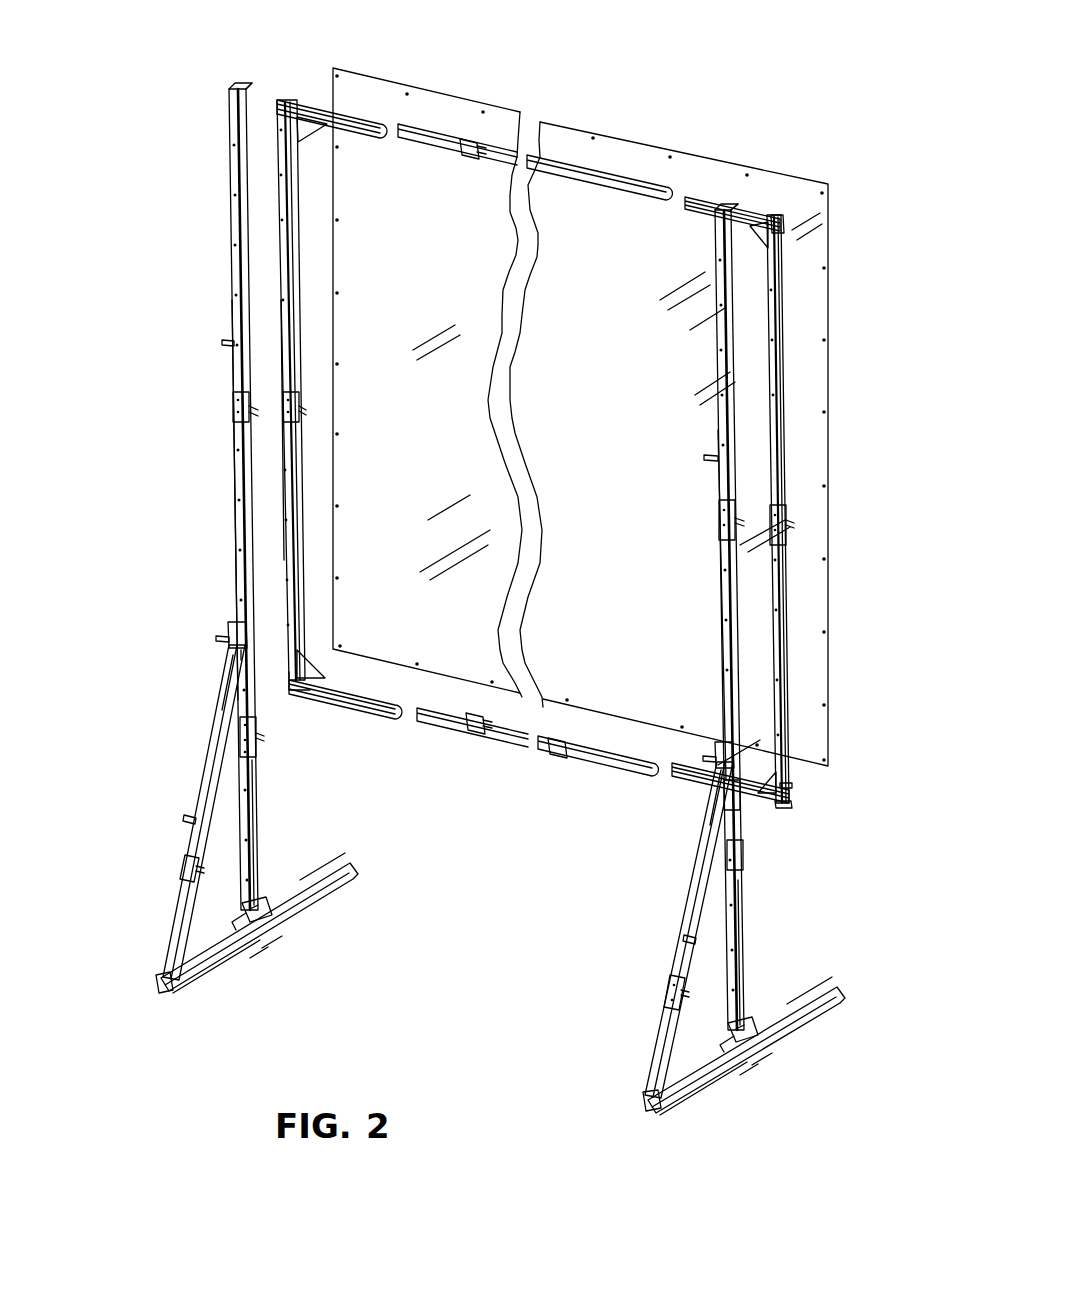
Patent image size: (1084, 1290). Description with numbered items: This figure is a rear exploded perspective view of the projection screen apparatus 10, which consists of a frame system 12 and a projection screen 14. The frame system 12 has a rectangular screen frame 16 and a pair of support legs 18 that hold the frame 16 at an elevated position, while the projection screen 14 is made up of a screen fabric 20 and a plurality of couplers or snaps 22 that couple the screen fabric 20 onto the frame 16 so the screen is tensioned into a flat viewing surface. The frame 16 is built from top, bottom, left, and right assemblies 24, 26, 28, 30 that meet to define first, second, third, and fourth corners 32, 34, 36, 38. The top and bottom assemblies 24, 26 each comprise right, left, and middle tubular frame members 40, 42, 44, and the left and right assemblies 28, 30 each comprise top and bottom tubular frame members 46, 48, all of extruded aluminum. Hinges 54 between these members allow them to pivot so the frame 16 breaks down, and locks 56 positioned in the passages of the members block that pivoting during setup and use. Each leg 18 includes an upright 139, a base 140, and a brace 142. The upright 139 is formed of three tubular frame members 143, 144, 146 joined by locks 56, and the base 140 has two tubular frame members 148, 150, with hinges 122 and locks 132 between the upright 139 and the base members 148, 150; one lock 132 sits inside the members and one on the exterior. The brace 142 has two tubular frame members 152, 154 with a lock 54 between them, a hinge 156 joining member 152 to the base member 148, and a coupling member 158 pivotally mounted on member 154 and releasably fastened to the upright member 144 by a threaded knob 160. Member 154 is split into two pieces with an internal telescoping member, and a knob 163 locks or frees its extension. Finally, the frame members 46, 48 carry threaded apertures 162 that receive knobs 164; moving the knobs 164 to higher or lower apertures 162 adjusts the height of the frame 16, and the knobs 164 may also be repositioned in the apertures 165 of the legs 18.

The projection screen apparatus 10 is at (773, 110).
The frame system 12 is at (487, 516).
The projection screen 14 is at (533, 414).
The screen frame 16 is at (769, 193).
The support legs 18 is at (263, 757).
The screen fabric 20 is at (543, 400).
The snaps 22 is at (483, 110).
The top assembly 24 is at (674, 178).
The bottom assembly 26 is at (622, 742).
The left assembly 28 is at (310, 517).
The right assembly 30 is at (722, 432).
The first corner 32 is at (581, 403).
The second corner 34 is at (790, 214).
The third corner 36 is at (820, 805).
The fourth corner 38 is at (300, 698).
The right tubular frame member 40 is at (352, 128).
The left tubular frame member 42 is at (620, 197).
The middle tubular frame member 44 is at (540, 172).
The top tubular frame member 46 is at (287, 213).
The bottom tubular frame member 48 is at (294, 568).
The hinges 54 is at (590, 160).
The locks 56 is at (458, 163).
The hinges 122 is at (276, 941).
The lock 132 is at (271, 901).
The upright 139 is at (213, 325).
The base 140 is at (491, 992).
The brace 142 is at (467, 880).
The tubular frame member 143 is at (234, 181).
The tubular frame member 144 is at (237, 436).
The tubular frame member 146 is at (255, 830).
The base frame member 148 is at (207, 970).
The base frame member 150 is at (322, 905).
The brace frame member 152 is at (230, 926).
The brace frame member 154 is at (226, 660).
The hinge 156 is at (160, 990).
The coupling member 158 is at (229, 620).
The threaded knob 160 is at (253, 635).
The threaded apertures 162 is at (293, 300).
The knob 163 is at (182, 819).
The knobs 164 is at (221, 343).
The apertures 165 is at (233, 128).